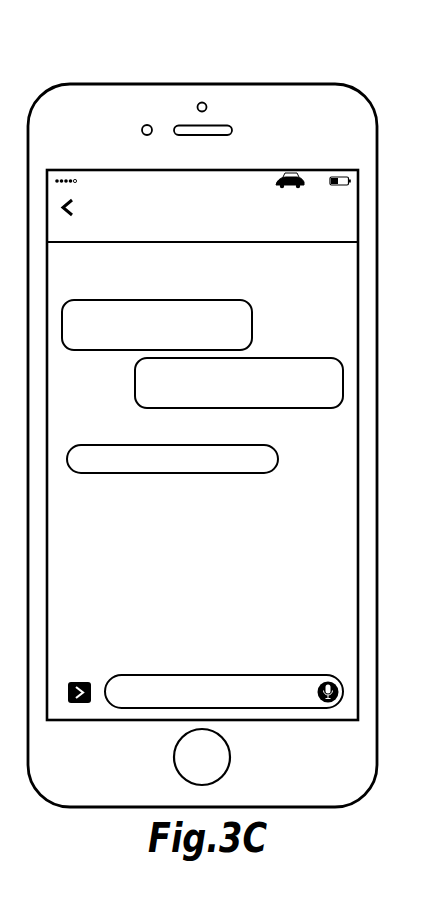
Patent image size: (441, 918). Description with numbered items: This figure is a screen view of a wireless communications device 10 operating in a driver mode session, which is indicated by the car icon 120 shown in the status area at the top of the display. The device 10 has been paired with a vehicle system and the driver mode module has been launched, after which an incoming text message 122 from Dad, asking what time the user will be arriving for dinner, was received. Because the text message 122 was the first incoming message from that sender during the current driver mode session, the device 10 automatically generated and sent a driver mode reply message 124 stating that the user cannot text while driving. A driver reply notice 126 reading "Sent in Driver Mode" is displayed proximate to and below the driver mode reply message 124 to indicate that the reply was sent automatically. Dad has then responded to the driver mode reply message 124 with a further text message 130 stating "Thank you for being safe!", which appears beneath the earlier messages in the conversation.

The device 10 is at (138, 107).
The car icon 120 is at (290, 172).
The text message 122 is at (252, 319).
The driver mode reply message 124 is at (343, 377).
The driver reply notice 126 is at (348, 421).
The text message 130 is at (204, 473).